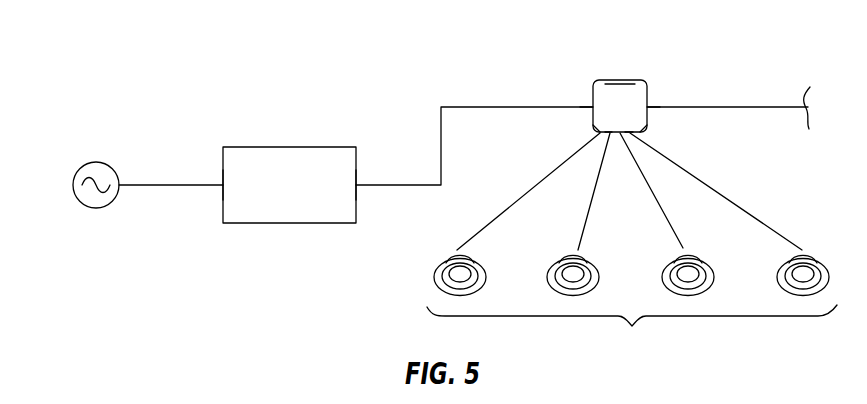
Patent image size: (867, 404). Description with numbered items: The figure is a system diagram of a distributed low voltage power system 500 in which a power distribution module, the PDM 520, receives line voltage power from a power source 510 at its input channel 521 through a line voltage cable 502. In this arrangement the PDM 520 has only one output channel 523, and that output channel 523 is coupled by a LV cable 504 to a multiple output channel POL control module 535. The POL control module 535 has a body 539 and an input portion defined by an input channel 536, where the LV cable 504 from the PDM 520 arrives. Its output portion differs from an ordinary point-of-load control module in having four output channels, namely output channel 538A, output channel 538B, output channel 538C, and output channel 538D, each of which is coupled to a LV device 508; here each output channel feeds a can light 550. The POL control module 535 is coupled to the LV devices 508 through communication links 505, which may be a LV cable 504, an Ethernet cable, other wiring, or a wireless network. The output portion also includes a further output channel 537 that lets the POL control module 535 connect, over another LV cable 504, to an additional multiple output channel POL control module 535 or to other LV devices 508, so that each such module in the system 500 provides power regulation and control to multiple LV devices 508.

The distributed low voltage power system 500 is at (114, 72).
The power source 510 is at (97, 161).
The line voltage cable 502 is at (165, 185).
The PDM 520 is at (236, 143).
The input channel 521 is at (222, 187).
The output channel 523 is at (358, 185).
The LV cable 504 is at (417, 187).
The multiple output channel POL control module 535 is at (608, 73).
The body 539 is at (623, 87).
The input channel 536 is at (591, 107).
The output channel 537 is at (650, 107).
The output channel 538A is at (594, 132).
The output channel 538B is at (610, 134).
The output channel 538C is at (628, 134).
The output channel 538D is at (646, 132).
The communication link 505 is at (580, 233).
The can light 550 is at (433, 277).
The LV device 508 is at (632, 332).